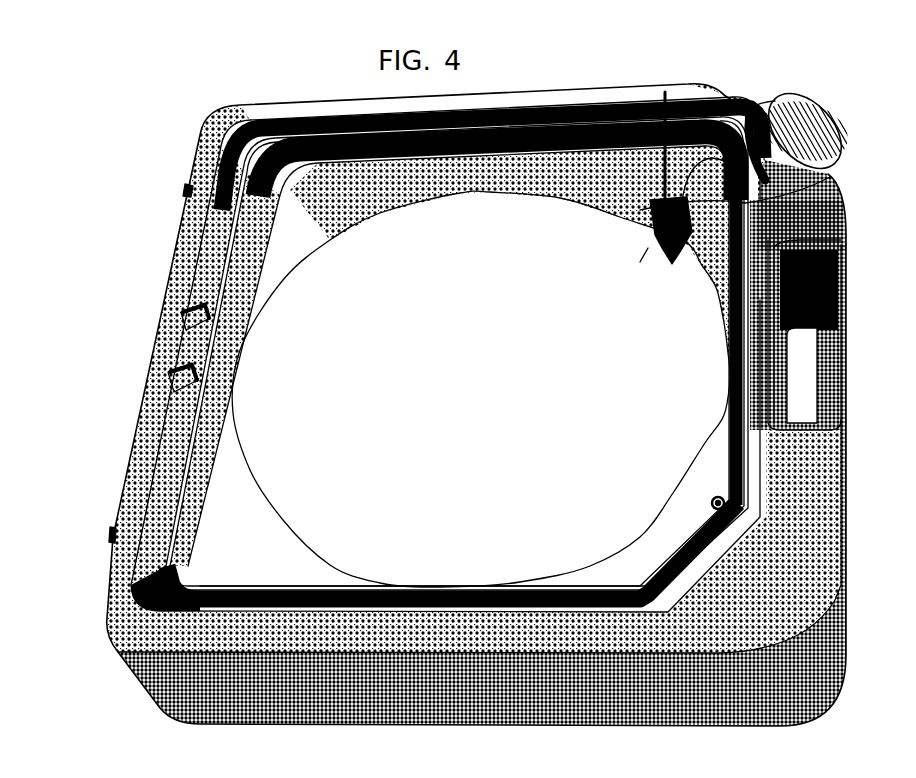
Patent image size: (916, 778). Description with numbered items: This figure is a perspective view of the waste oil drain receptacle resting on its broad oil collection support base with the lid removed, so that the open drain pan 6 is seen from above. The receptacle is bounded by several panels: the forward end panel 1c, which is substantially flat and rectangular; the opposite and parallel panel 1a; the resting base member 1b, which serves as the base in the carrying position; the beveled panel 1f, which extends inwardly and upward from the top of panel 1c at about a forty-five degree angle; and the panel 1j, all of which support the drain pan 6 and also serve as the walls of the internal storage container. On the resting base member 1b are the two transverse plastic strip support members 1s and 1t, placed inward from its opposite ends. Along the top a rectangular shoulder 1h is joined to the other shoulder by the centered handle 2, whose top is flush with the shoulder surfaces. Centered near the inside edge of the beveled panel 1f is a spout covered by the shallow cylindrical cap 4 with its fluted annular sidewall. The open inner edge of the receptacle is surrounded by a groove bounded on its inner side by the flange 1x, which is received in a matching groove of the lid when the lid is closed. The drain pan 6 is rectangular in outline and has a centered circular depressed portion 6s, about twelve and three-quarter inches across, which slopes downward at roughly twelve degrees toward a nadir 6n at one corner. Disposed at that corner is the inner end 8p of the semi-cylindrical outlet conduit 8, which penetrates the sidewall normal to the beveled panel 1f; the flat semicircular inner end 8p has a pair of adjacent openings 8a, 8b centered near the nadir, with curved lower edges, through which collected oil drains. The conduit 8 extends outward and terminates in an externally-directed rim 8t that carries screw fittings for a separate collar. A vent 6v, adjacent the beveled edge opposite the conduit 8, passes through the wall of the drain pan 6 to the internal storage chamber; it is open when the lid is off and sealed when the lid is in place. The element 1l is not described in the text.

The panel 1a is at (477, 695).
The resting base member 1b is at (152, 348).
The forward end panel 1c is at (590, 93).
The beveled panel 1f is at (727, 106).
The rectangular shoulder 1h is at (838, 550).
The panel 1j is at (784, 387).
The housing shoulder 1l is at (843, 237).
The support member 1s is at (186, 190).
The support member 1t is at (110, 530).
The flange 1x is at (167, 578).
The handle 2 is at (853, 358).
The cylindrical cap 4 is at (828, 122).
The drain pan 6 is at (612, 332).
The nadir 6n is at (640, 262).
The circular depressed portion 6s is at (448, 385).
The vent 6v is at (712, 502).
The semi-cylindrical outlet conduit 8 is at (832, 177).
The opening 8a is at (655, 252).
The opening 8b is at (662, 263).
The inner end of outlet conduit 8p is at (665, 95).
The externally-directed rim 8t is at (767, 100).